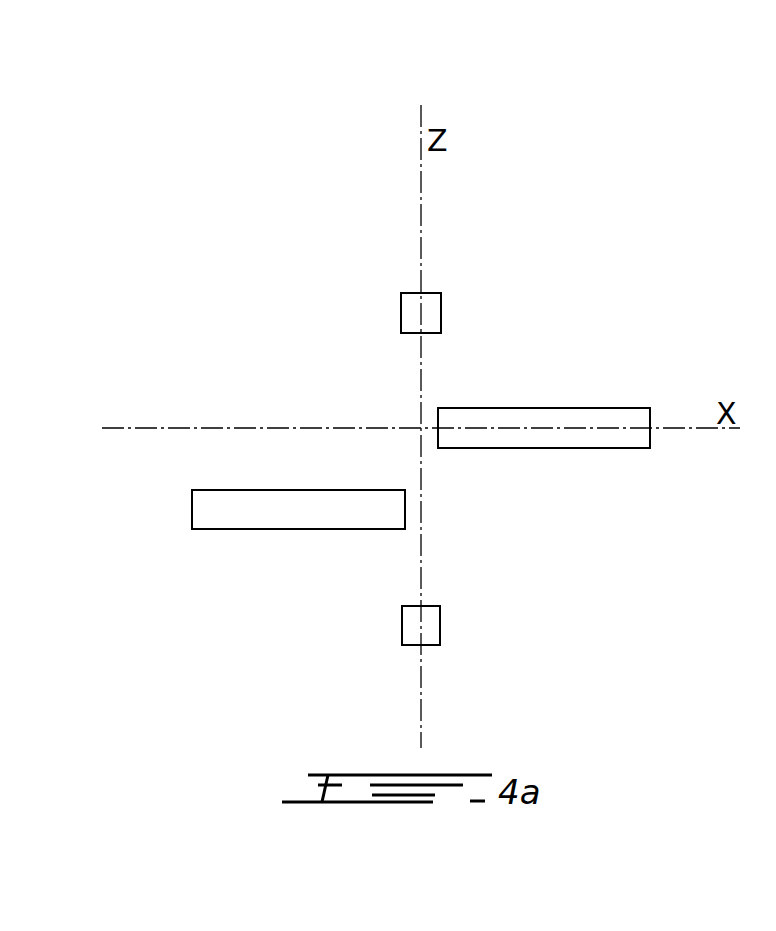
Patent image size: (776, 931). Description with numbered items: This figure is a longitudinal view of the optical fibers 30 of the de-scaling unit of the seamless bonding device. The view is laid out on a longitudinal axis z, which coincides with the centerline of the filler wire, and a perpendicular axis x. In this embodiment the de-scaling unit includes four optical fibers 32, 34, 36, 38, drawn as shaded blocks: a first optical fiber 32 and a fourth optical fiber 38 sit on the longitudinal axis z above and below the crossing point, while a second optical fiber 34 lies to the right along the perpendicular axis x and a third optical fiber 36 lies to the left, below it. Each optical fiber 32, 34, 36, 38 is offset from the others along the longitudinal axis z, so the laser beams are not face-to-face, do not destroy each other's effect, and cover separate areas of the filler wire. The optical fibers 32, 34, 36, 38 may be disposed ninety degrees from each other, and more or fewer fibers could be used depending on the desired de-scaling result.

The optical fibers 30 is at (640, 220).
The optical fiber 32 is at (441, 312).
The optical fiber 34 is at (563, 448).
The optical fiber 36 is at (283, 529).
The optical fiber 38 is at (440, 627).